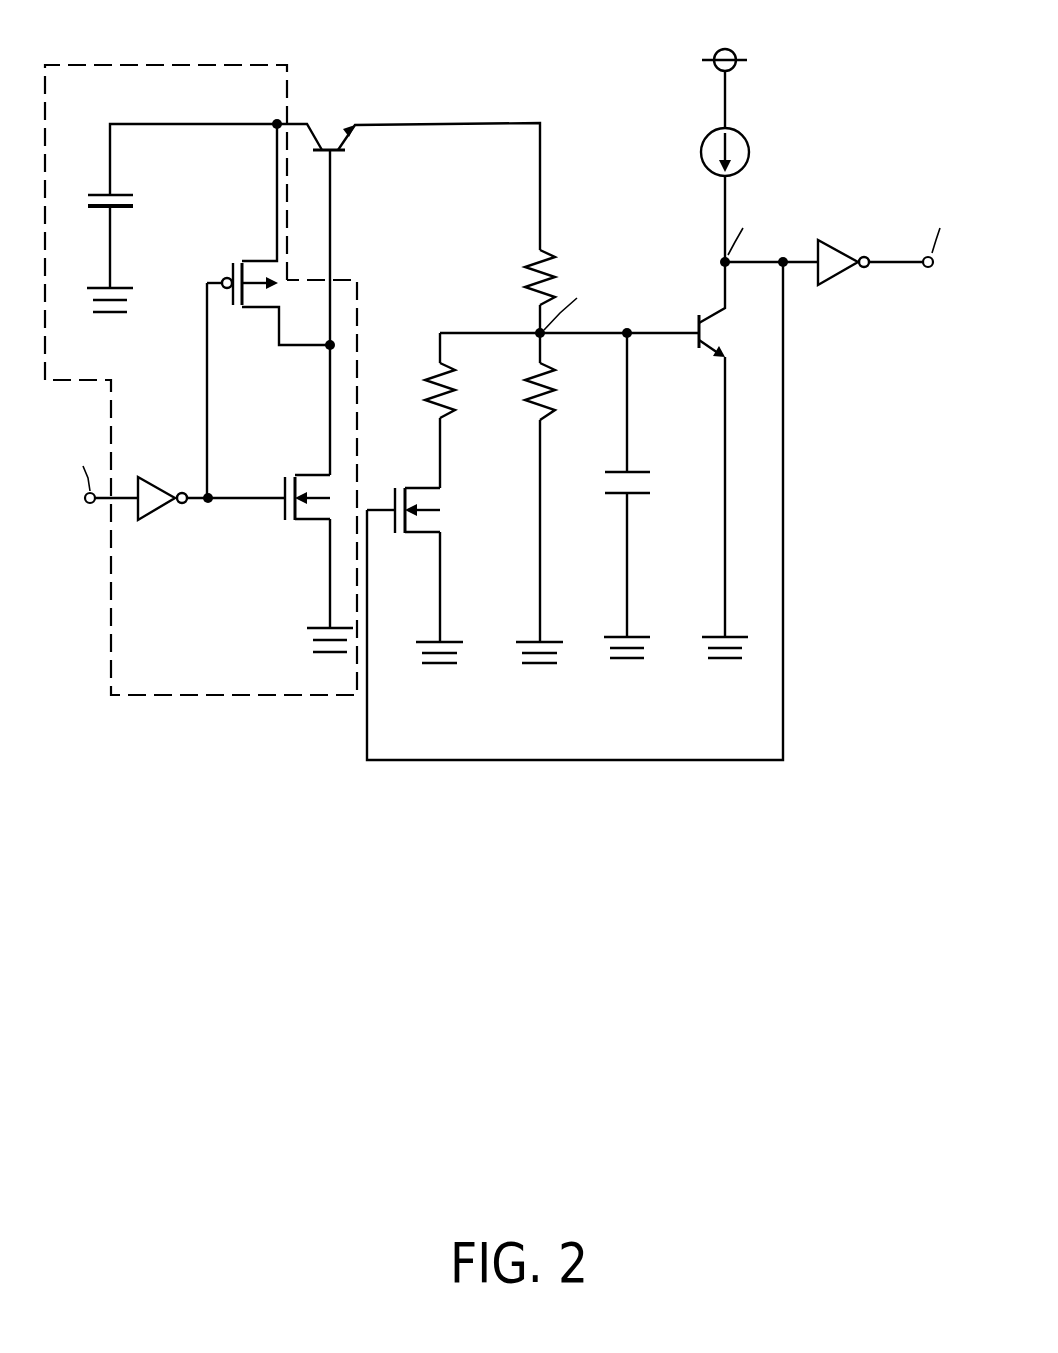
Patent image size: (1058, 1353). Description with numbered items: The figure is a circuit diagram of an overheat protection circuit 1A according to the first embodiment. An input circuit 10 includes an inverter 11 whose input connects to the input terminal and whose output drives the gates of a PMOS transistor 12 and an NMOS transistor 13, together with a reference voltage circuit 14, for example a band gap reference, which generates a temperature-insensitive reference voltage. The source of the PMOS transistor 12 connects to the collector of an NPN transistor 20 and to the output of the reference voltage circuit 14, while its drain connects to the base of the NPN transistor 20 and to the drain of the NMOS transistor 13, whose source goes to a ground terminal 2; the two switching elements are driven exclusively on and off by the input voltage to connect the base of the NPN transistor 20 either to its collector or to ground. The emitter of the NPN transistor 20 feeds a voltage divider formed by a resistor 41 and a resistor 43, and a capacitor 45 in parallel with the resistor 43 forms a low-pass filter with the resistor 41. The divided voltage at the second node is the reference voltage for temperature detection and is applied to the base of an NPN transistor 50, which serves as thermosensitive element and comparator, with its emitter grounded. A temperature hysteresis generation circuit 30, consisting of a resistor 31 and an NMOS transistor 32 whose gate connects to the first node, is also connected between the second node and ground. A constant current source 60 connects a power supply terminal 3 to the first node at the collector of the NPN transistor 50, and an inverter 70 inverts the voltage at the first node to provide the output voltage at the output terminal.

The overheat protection circuit 1A is at (886, 79).
The ground terminal 2 is at (121, 288).
The power supply terminal 3 is at (712, 53).
The input circuit 10 is at (172, 703).
The inverter 11 is at (158, 507).
The PMOS transistor 12 is at (258, 258).
The NMOS transistor 13 is at (313, 472).
The reference voltage circuit 14 is at (103, 193).
The NPN transistor 20 is at (312, 125).
The temperature hysteresis generation circuit 30 is at (404, 290).
The resistor 31 is at (432, 363).
The NMOS transistor 32 is at (422, 487).
The resistor 41 is at (533, 248).
The resistor 43 is at (533, 413).
The capacitor 45 is at (637, 468).
The NPN transistor 50 is at (712, 317).
The constant current source 60 is at (737, 145).
The inverter 70 is at (840, 253).